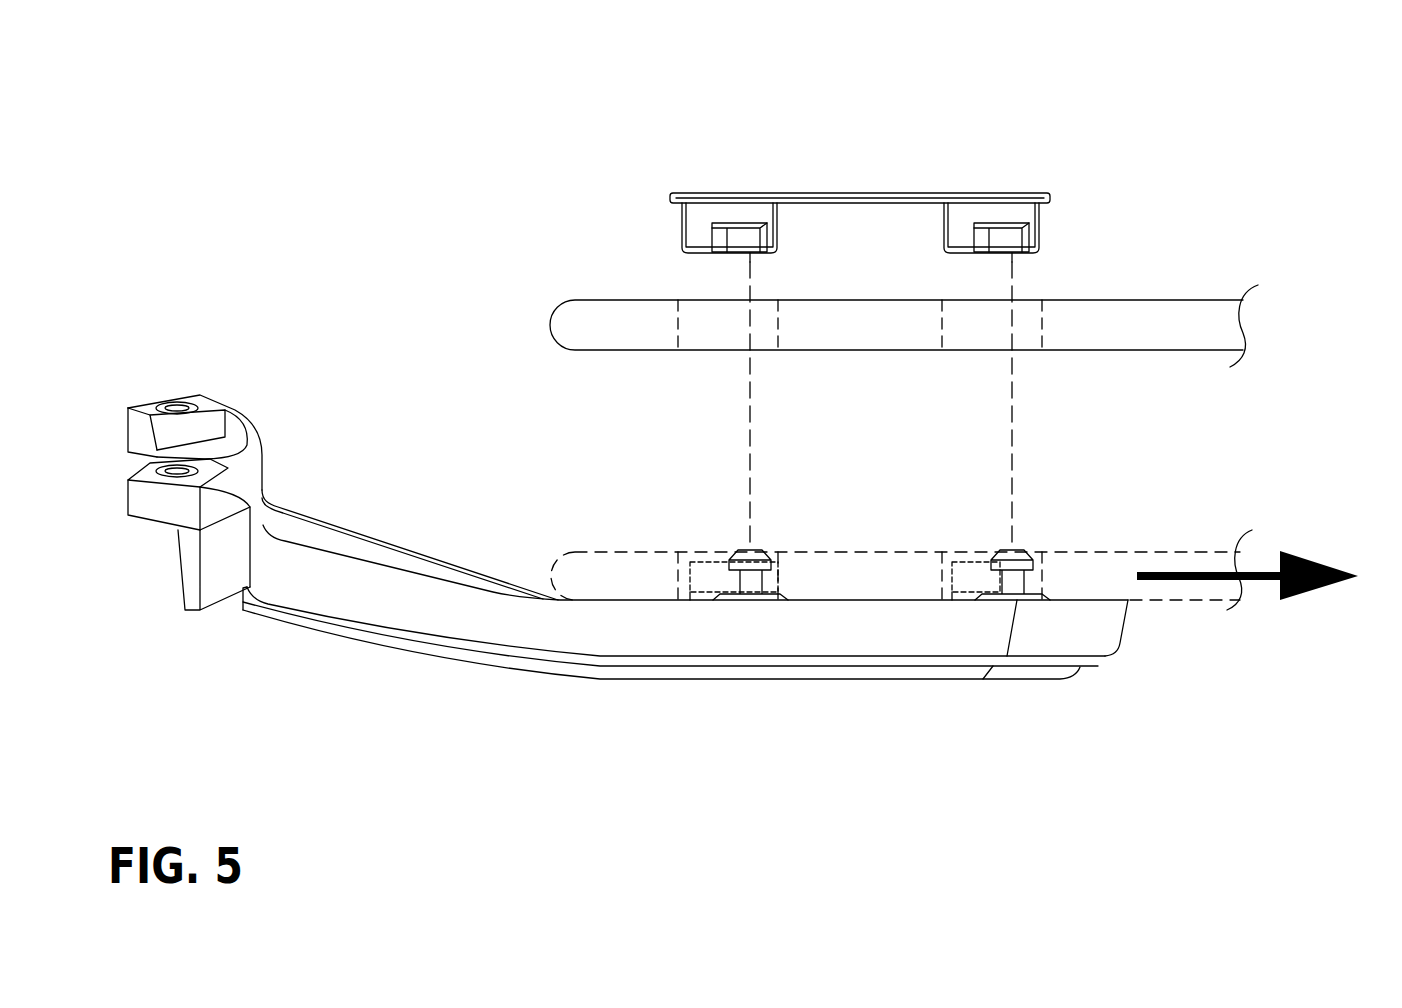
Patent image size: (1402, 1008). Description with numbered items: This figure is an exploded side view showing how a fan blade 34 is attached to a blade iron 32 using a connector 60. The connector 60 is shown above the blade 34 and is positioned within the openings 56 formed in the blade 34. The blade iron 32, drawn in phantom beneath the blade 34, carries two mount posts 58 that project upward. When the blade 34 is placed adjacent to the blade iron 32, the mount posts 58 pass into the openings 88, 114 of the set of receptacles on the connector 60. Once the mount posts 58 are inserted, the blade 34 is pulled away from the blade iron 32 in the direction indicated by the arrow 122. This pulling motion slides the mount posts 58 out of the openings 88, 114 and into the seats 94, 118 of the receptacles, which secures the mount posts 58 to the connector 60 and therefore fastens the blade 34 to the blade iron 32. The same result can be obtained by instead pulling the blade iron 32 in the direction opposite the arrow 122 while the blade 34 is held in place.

The blade iron 32 is at (369, 530).
The blade 34 is at (1159, 296).
The openings 56 is at (717, 338).
The mount posts 58 is at (735, 559).
The connector 60 is at (1042, 186).
The opening 88 is at (959, 575).
The seat 94 is at (951, 599).
The opening 114 is at (706, 576).
The seat 118 is at (691, 595).
The arrow 122 is at (1210, 580).